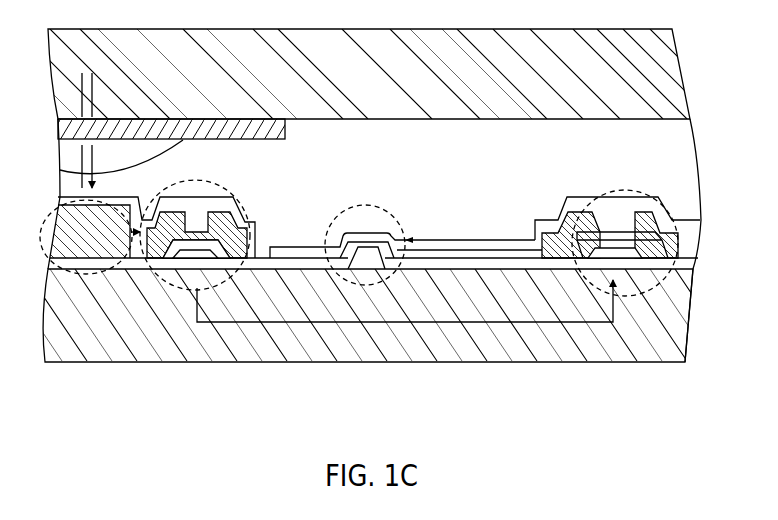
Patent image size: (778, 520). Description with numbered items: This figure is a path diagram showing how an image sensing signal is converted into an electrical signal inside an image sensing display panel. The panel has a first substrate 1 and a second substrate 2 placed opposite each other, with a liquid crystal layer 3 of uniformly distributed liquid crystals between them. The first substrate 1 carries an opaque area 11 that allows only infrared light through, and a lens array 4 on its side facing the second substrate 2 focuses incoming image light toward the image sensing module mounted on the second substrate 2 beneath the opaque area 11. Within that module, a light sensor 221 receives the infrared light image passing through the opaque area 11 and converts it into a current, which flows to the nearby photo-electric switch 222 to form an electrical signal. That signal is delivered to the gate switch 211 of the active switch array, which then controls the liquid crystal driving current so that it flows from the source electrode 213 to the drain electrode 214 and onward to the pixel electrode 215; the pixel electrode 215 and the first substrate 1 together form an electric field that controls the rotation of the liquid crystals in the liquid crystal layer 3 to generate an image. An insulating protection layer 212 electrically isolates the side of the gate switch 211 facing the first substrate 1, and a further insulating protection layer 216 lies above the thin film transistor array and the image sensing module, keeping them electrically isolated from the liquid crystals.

The first substrate 1 is at (690, 81).
The opaque area 11 is at (58, 130).
The second substrate 2 is at (690, 331).
The gate switch 211 is at (683, 292).
The insulating protection layer 212 is at (690, 259).
The source electrode 213 is at (678, 243).
The drain electrode 214 is at (565, 198).
The pixel electrode 215 is at (372, 212).
The insulating protection layer 216 is at (58, 199).
The light sensor 221 is at (75, 259).
The photo-electric switch 222 is at (75, 240).
The liquid crystal layer 3 is at (690, 181).
The lens array 4 is at (140, 155).